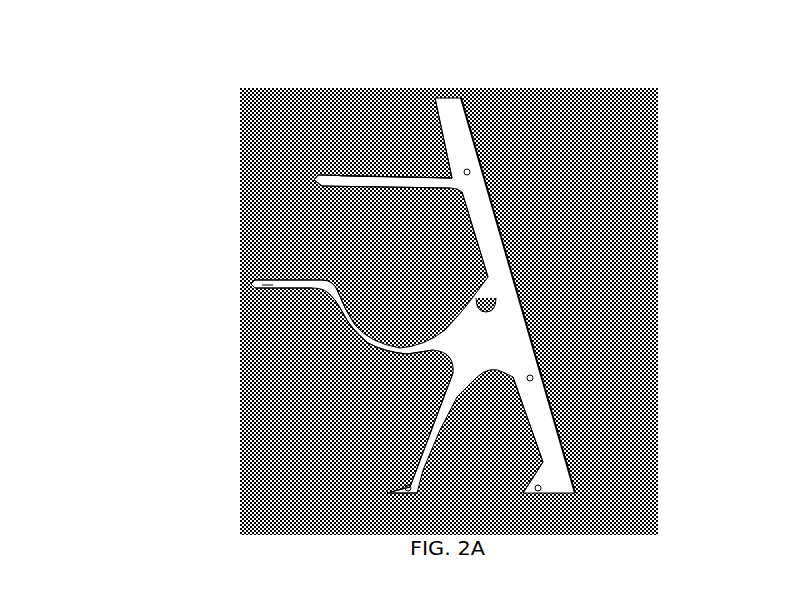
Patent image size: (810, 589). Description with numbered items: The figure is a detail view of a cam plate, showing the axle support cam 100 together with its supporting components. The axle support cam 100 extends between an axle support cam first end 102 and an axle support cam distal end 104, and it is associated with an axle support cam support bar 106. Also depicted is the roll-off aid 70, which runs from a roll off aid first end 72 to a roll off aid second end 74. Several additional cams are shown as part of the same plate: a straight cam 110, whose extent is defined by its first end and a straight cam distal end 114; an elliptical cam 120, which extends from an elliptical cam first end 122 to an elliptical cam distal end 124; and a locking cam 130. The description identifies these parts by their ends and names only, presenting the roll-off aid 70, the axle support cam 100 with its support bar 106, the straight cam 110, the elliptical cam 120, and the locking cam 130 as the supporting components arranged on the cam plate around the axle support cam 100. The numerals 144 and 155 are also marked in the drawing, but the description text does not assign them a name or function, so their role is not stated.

The axle support cam 100 is at (592, 564).
The roll-off aid 70 is at (383, 177).
The roll off aid first end 72 is at (308, 175).
The roll off aid second end 74 is at (438, 177).
The axle support cam distal end 104 is at (489, 284).
The channel wall line 144 is at (486, 203).
The alignment marker 155 is at (468, 158).
The elliptical cam distal end 124 is at (474, 297).
The locking cam 130 is at (492, 305).
The straight cam distal end 114 is at (340, 283).
The straight cam 110 is at (255, 280).
The axle support cam first end 102 is at (255, 288).
The elliptical cam first end 122 is at (333, 297).
The elliptical cam 120 is at (375, 352).
The axle support cam support bar 106 is at (432, 433).